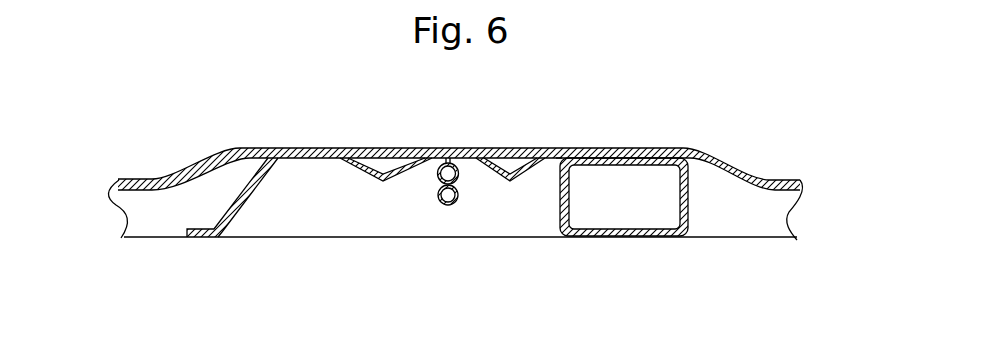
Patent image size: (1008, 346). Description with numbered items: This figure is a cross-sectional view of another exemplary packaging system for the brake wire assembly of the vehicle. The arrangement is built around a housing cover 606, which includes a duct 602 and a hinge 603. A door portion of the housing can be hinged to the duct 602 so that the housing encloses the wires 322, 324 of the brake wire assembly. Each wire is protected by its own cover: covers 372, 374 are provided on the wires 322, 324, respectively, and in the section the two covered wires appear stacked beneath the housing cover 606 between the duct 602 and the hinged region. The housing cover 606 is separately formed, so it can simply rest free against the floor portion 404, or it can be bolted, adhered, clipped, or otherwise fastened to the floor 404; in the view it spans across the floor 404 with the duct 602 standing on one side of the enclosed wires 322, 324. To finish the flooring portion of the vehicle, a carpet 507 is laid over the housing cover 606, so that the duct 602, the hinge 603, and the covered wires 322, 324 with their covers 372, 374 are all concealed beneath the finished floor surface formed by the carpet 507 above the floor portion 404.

The carpet 507 is at (740, 190).
The floor portion 404 is at (449, 238).
The duct 602 is at (648, 190).
The hinge 603 is at (558, 160).
The housing cover 606 is at (447, 160).
The wire 322 is at (438, 174).
The wire 324 is at (439, 200).
The cover 372 is at (458, 172).
The cover 374 is at (458, 200).